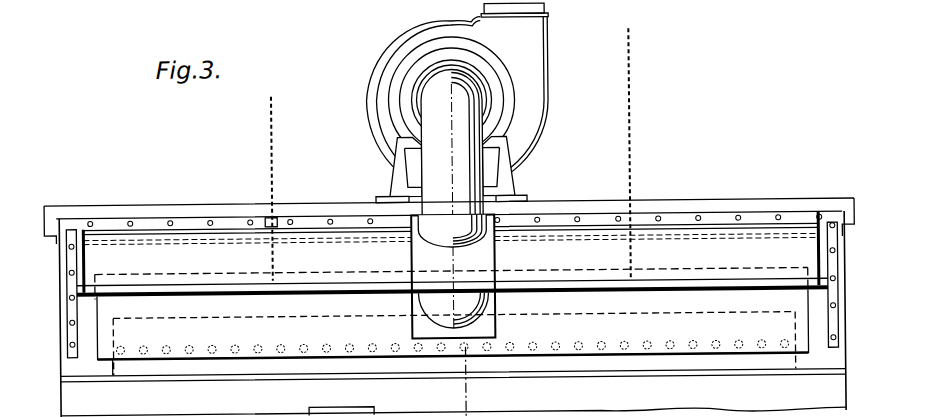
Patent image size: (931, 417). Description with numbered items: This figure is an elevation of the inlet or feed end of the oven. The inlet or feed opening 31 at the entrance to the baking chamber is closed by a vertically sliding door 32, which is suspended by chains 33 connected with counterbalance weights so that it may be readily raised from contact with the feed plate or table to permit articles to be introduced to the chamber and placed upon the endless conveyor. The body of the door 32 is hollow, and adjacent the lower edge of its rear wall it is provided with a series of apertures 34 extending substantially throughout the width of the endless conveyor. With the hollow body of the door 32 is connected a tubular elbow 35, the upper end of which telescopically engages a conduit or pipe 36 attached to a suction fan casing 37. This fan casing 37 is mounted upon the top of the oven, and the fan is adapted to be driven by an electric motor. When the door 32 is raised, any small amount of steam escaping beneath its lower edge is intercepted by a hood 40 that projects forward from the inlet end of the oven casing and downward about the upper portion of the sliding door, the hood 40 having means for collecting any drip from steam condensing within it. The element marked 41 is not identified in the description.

The inlet or feed opening 31 is at (620, 364).
The vertically sliding door 32 is at (452, 293).
The chains 33 is at (285, 138).
The apertures 34 is at (259, 349).
The tubular elbow 35 is at (452, 231).
The conduit or pipe 36 is at (453, 200).
The suction fan casing 37 is at (549, 101).
The hood 40 is at (451, 255).
The outlet flange 41 is at (484, 9).